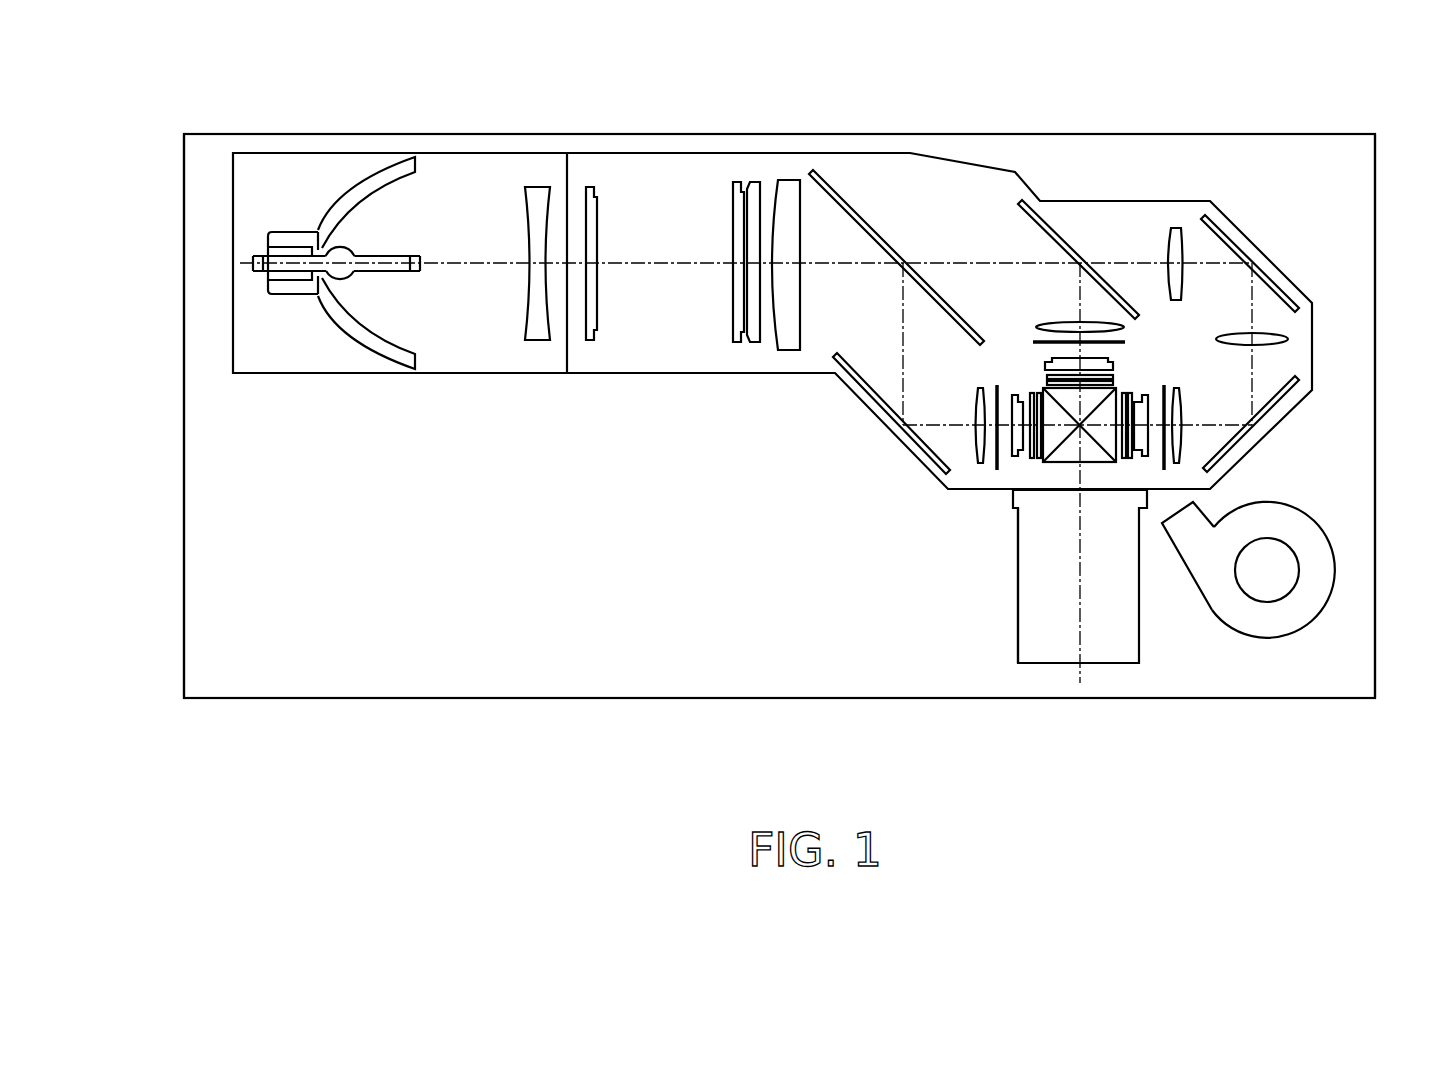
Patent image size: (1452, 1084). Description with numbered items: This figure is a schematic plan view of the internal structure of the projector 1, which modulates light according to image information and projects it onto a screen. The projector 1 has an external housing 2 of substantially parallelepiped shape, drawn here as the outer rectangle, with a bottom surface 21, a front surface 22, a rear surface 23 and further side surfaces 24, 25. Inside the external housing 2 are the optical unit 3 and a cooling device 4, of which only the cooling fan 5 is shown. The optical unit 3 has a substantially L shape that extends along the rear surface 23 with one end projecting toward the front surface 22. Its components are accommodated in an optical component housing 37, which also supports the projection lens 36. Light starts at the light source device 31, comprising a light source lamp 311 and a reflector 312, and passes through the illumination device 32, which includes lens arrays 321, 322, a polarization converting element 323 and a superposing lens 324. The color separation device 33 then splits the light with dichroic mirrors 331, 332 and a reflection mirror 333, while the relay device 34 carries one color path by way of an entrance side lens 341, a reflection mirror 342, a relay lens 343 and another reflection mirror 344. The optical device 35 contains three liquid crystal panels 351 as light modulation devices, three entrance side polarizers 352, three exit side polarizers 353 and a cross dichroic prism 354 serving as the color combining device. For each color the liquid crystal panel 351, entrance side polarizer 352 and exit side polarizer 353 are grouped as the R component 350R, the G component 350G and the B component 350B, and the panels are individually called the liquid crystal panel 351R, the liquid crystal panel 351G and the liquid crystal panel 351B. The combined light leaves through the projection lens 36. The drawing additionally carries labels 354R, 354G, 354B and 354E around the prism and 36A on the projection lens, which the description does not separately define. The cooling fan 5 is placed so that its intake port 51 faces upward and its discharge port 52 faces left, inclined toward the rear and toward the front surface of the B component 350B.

The projector 1 is at (200, 100).
The external housing 2 is at (1377, 413).
The bottom surface 21 is at (1243, 134).
The front surface 22 is at (820, 698).
The rear surface 23 is at (1047, 134).
The side surface 24 is at (178, 665).
The side surface 25 is at (1377, 272).
The optical unit 3 is at (674, 498).
The light source device 31 is at (401, 308).
The light source lamp 311 is at (340, 269).
The reflector 312 is at (366, 290).
The illumination device 32 is at (706, 251).
The lens array 321 is at (595, 322).
The lens array 322 is at (732, 322).
The polarization converting element 323 is at (757, 333).
The superposing lens 324 is at (787, 337).
The color separation device 33 is at (974, 284).
The dichroic mirror 331 is at (852, 210).
The dichroic mirror 332 is at (1045, 222).
The reflection mirror 333 is at (918, 456).
The relay device 34 is at (1236, 328).
The entrance side lens 341 is at (1166, 256).
The reflection mirror 342 is at (1240, 243).
The relay lens 343 is at (1284, 338).
The reflection mirror 344 is at (1255, 466).
The optical device 35 is at (1048, 413).
The G component 350G is at (1035, 394).
The R component 350R is at (848, 561).
The B component 350B is at (1228, 398).
The liquid crystal panel 351 is at (1053, 415).
The liquid crystal panel 351G is at (1044, 316).
The liquid crystal panel 351R is at (942, 473).
The liquid crystal panel 351B is at (1180, 412).
The entrance side polarizer 352 is at (1065, 326).
The exit side polarizer 353 is at (1047, 362).
The cross dichroic prism 354 is at (1042, 390).
The red exit-side polarization plate 354R is at (1030, 420).
The green exit-side polarization plate 354G is at (1100, 376).
The blue exit-side polarization plate 354B is at (1130, 458).
The light exit surface of prism 354E is at (1068, 464).
The projection lens 36 is at (1072, 576).
The lens barrel 36A is at (1032, 625).
The optical component housing 37 is at (660, 152).
The cooling device 4 is at (1296, 577).
The cooling fan 5 is at (1248, 577).
The intake port 51 is at (1258, 592).
The discharge port 52 is at (1180, 502).